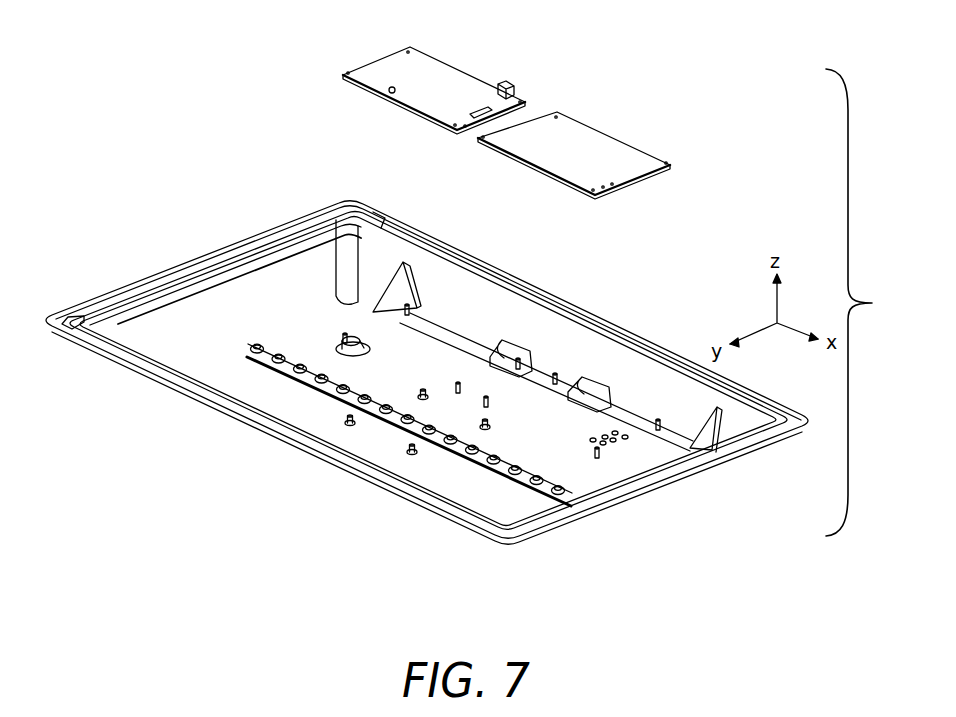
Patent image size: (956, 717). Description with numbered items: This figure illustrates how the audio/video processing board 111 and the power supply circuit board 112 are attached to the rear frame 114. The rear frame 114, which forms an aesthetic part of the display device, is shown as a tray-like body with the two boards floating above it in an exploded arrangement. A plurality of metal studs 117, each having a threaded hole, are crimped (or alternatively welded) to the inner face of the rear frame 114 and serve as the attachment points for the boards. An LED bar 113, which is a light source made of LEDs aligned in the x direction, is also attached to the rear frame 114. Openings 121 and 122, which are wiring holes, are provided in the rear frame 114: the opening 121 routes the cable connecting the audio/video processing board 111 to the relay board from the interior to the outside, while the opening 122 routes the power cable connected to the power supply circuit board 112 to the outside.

The audio/video processing board 111 is at (473, 74).
The power supply circuit board 112 is at (633, 146).
The LED bar 113 is at (247, 347).
The rear frame 114 is at (278, 222).
The metal studs 117 is at (349, 341).
The opening 121 is at (410, 470).
The opening 122 is at (467, 482).